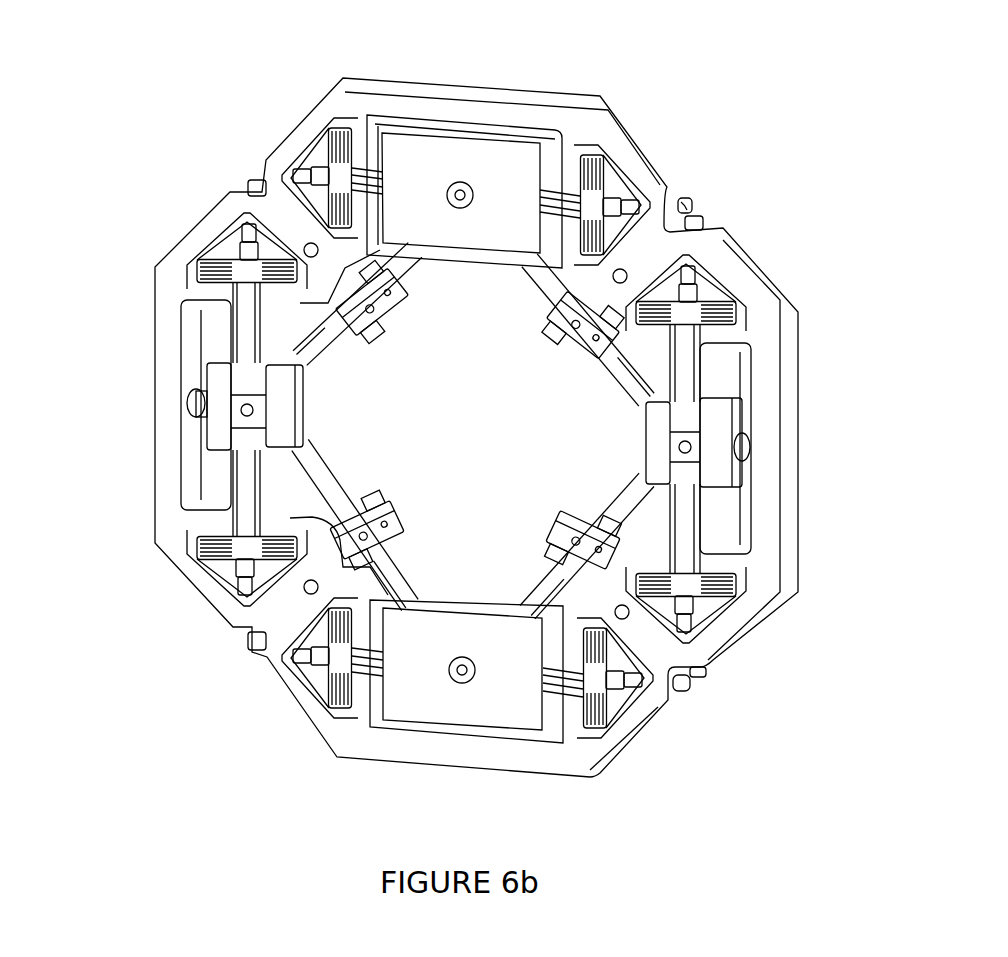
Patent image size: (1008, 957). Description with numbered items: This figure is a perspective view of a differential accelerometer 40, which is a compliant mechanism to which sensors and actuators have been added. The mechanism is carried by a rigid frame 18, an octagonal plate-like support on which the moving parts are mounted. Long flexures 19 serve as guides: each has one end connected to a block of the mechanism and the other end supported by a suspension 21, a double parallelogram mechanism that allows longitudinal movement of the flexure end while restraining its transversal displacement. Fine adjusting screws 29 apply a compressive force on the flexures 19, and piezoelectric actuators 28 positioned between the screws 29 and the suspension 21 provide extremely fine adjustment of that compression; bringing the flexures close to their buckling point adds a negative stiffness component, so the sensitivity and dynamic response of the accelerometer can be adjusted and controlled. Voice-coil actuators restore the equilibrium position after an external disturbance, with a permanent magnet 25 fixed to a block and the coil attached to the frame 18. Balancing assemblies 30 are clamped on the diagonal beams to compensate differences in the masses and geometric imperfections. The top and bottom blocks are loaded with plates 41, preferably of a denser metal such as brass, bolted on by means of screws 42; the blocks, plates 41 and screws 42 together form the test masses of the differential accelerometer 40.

The rigid frame 18 is at (180, 238).
The long flexures 19 is at (240, 352).
The suspensions 21 is at (597, 153).
The permanent magnet 25 is at (750, 437).
The piezoelectric actuators 28 is at (693, 280).
The fine adjusting screws 29 is at (680, 197).
The balancing assemblies 30 is at (390, 502).
The differential accelerometer 40 is at (459, 437).
The plates 41 is at (503, 170).
The screws 42 is at (450, 675).